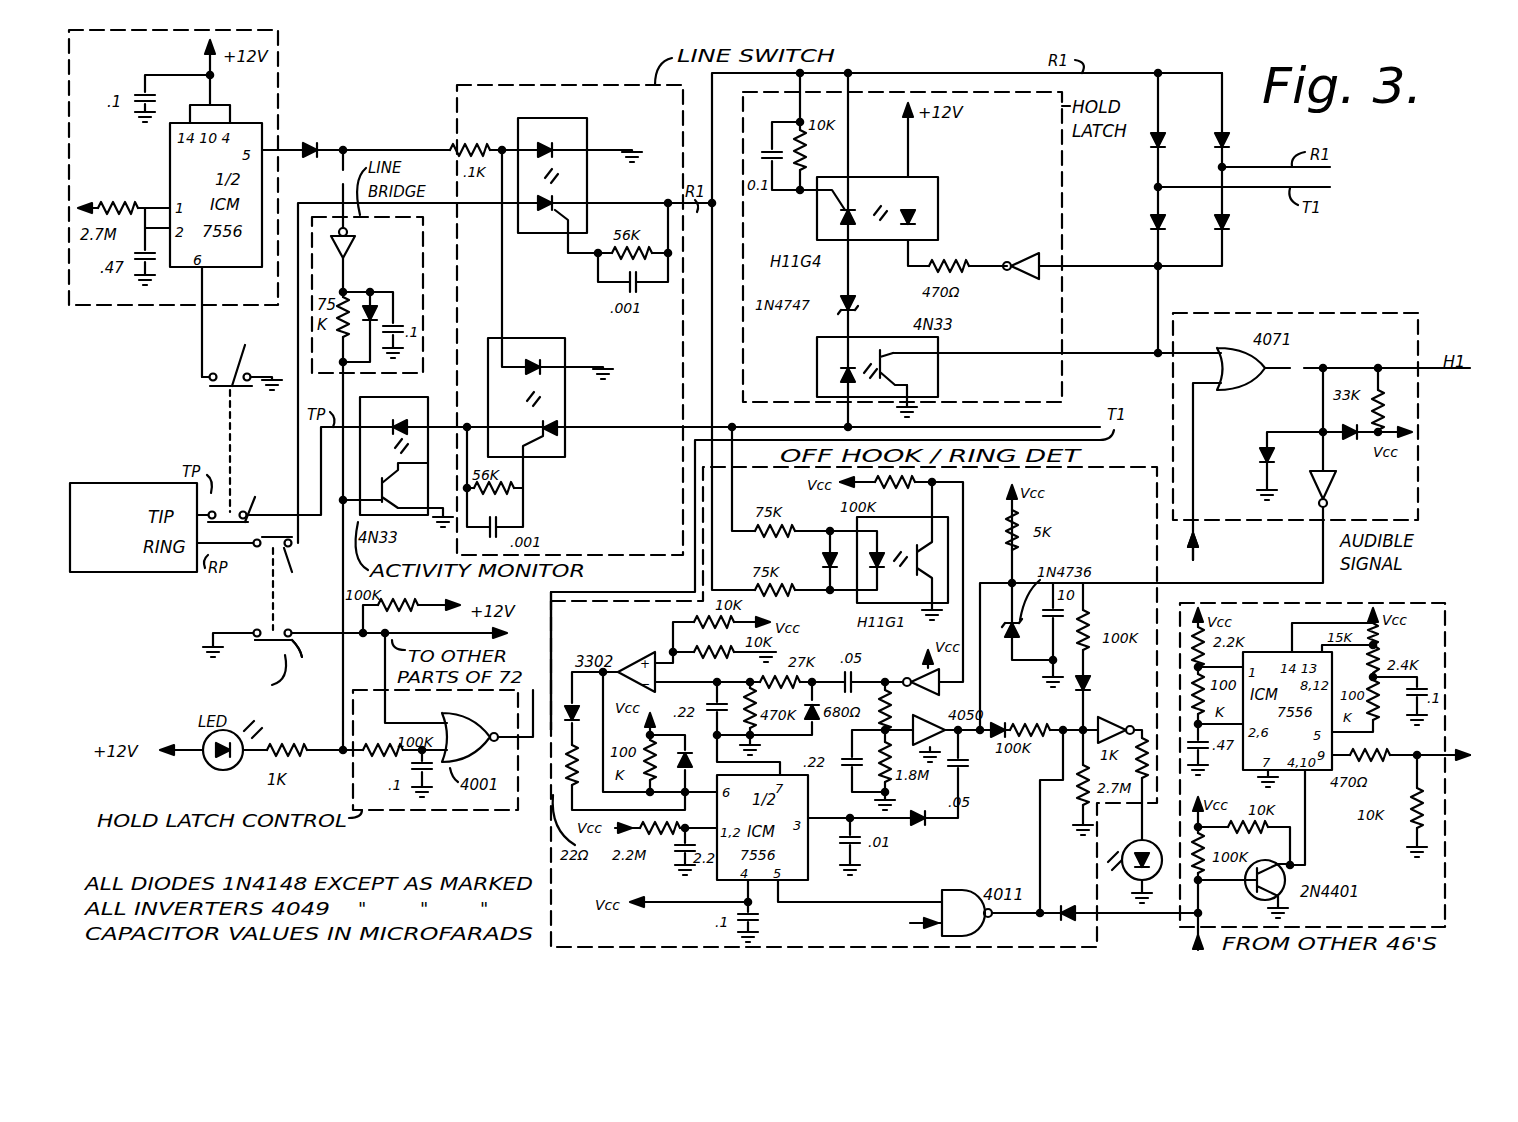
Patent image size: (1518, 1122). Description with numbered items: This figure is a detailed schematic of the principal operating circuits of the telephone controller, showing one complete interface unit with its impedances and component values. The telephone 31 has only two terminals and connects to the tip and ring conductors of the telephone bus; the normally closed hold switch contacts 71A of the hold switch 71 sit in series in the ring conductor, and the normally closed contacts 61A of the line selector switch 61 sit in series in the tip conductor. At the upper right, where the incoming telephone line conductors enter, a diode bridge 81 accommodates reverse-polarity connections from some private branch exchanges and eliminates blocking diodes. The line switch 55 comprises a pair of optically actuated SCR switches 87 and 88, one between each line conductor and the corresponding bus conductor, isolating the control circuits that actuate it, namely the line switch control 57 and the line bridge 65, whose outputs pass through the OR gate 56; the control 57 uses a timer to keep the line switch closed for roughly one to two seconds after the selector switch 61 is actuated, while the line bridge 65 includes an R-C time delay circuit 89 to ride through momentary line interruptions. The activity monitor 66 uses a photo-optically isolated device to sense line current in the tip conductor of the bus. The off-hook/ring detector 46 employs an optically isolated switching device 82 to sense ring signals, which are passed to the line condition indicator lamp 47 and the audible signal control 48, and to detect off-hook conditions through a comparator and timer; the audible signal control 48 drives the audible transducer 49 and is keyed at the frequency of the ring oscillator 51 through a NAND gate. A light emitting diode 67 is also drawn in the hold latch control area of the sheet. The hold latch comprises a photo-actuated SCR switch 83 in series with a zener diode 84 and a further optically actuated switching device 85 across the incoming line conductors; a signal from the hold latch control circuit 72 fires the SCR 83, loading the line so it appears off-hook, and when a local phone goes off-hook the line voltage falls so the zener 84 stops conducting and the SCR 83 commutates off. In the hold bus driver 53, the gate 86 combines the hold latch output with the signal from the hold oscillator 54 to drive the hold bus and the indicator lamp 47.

The telephone 31 is at (195, 585).
The off-hook/ring detector 46 is at (1108, 455).
The telephone line condition indicator lamp 47 is at (1162, 836).
The audible signal control circuit 48 is at (1462, 592).
The audible transducer 49 is at (1463, 761).
The ring oscillator 51 is at (867, 927).
The hold bus driver 53 is at (1437, 298).
The hold oscillator 54 is at (1252, 553).
The line switch 55 is at (457, 90).
The OR gate 56 is at (339, 138).
The line switch control 57 is at (283, 73).
The line selector switch 61 is at (243, 358).
The normally closed contacts 61A is at (236, 499).
The line bridge 65 is at (440, 245).
The activity monitor 66 is at (428, 405).
The hold LED 67 is at (212, 768).
The hold switch 71 is at (300, 640).
The hold switch contacts 71A is at (285, 552).
The hold latch control circuit 72 is at (415, 812).
The diode bridge 81 is at (1198, 125).
The optically isolated switching device 82 is at (952, 522).
The optically actuated SCR switch 83 is at (930, 177).
The zener diode 84 is at (862, 309).
The optically actuated switching device 85 is at (817, 357).
The gate 86 is at (1219, 350).
The optically actuated SCR switch 87 is at (587, 136).
The optically actuated SCR switch 88 is at (565, 358).
The R-C time delay circuit 89 is at (358, 290).